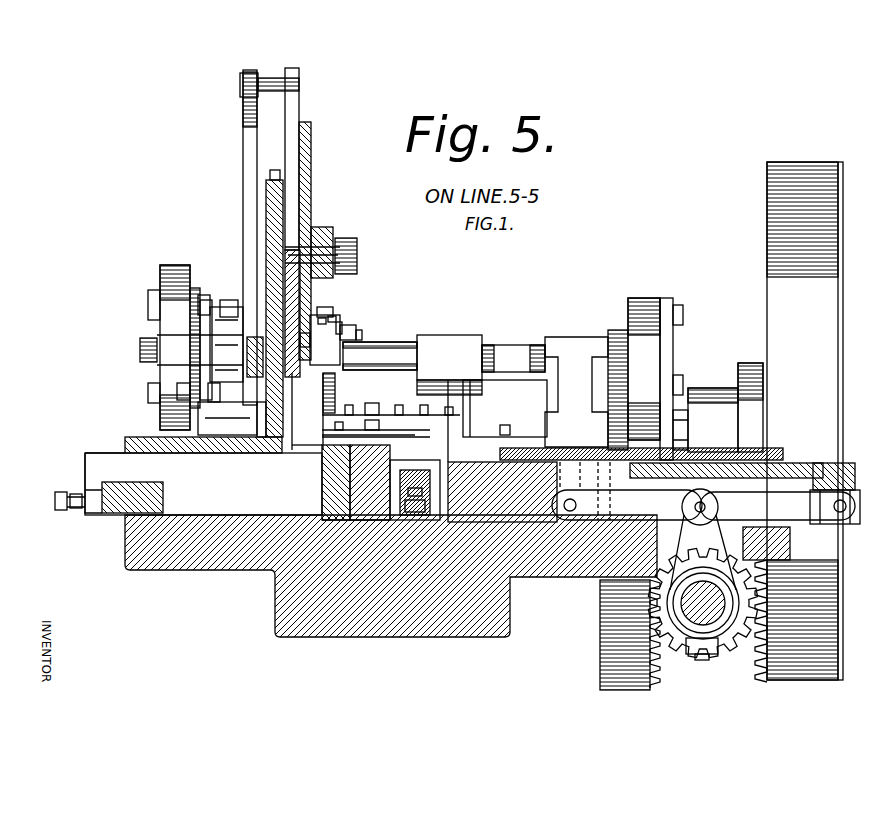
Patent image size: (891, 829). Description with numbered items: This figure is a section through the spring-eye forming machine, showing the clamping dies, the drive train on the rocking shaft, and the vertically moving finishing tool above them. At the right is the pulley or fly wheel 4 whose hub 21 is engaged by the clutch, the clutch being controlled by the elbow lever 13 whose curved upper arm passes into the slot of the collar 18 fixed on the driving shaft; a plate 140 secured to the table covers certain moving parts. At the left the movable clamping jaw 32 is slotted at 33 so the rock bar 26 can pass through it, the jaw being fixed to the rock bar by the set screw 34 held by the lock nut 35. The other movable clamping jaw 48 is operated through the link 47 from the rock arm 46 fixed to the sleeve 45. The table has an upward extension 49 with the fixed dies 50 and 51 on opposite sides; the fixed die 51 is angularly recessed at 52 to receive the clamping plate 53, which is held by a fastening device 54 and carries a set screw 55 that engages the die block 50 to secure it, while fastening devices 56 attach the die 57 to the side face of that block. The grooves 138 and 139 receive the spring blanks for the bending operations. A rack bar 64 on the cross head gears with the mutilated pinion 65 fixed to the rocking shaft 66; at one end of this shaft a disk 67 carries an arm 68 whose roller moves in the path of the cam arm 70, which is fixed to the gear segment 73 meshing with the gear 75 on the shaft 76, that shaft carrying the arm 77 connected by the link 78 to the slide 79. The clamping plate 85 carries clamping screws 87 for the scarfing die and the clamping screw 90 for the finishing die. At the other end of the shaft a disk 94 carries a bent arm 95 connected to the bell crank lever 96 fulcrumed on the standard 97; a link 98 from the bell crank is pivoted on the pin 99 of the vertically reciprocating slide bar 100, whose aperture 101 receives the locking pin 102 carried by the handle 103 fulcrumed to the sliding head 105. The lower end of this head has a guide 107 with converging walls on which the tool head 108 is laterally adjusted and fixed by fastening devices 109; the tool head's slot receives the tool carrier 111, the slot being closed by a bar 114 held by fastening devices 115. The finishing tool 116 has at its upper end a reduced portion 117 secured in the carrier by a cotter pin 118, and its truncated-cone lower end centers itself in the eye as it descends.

The pulley or fly wheel 4 is at (832, 297).
The elbow lever 13 is at (683, 418).
The collar 18 is at (723, 422).
The hub 21 is at (760, 387).
The rock bar 26 is at (163, 493).
The movable clamping jaw 32 is at (203, 484).
The slot 33 is at (133, 483).
The set screw 34 is at (77, 513).
The lock nut 35 is at (82, 490).
The sleeve 45 is at (677, 603).
The rock arm 46 is at (683, 565).
The link 47 is at (665, 508).
The movable clamping jaw 48 is at (502, 492).
The upward extension 49 is at (332, 513).
The fixed die 50 is at (325, 503).
The fixed die 51 is at (370, 490).
The angular recess 52 is at (410, 457).
The clamping plate 53 is at (322, 470).
The fastening device 54 is at (355, 415).
The set screw 55 is at (323, 432).
The fastening devices 56 is at (398, 500).
The die 57 is at (430, 505).
The rack bar 64 is at (467, 393).
The mutilated pinion 65 is at (449, 357).
The oscillating or rocking shaft 66 is at (507, 353).
The disk 67 is at (637, 305).
The arm 68 is at (668, 363).
The arm 70 is at (594, 390).
The gear segment 73 is at (605, 673).
The gear 75 is at (747, 647).
The shaft 76 is at (683, 647).
The arm 77 is at (700, 693).
The link 78 is at (852, 503).
The slide 79 is at (803, 473).
The clamping plate 85 is at (376, 425).
The clamping screws 87 is at (403, 403).
The clamping screw 90 is at (268, 440).
The disk 94 is at (172, 293).
The bent arm 95 is at (195, 297).
The bell crank lever 96 is at (213, 347).
The standard 97 is at (268, 202).
The link 98 is at (248, 148).
The pin 99 is at (265, 76).
The slide bar 100 is at (292, 107).
The aperture 101 is at (280, 258).
The pin 102 is at (317, 257).
The handle 103 is at (348, 243).
The sliding head 105 is at (302, 158).
The guide 107 is at (338, 328).
The tool head 108 is at (328, 340).
The fastening devices 109 is at (330, 320).
The tool carrier 111 is at (335, 395).
The bar 114 is at (367, 335).
The fastening devices 115 is at (358, 332).
The finishing tool 116 is at (320, 405).
The screw 117 is at (332, 318).
The cotter pin 118 is at (333, 322).
The groove 138 is at (277, 488).
The groove 139 is at (440, 508).
The plate 140 is at (722, 453).